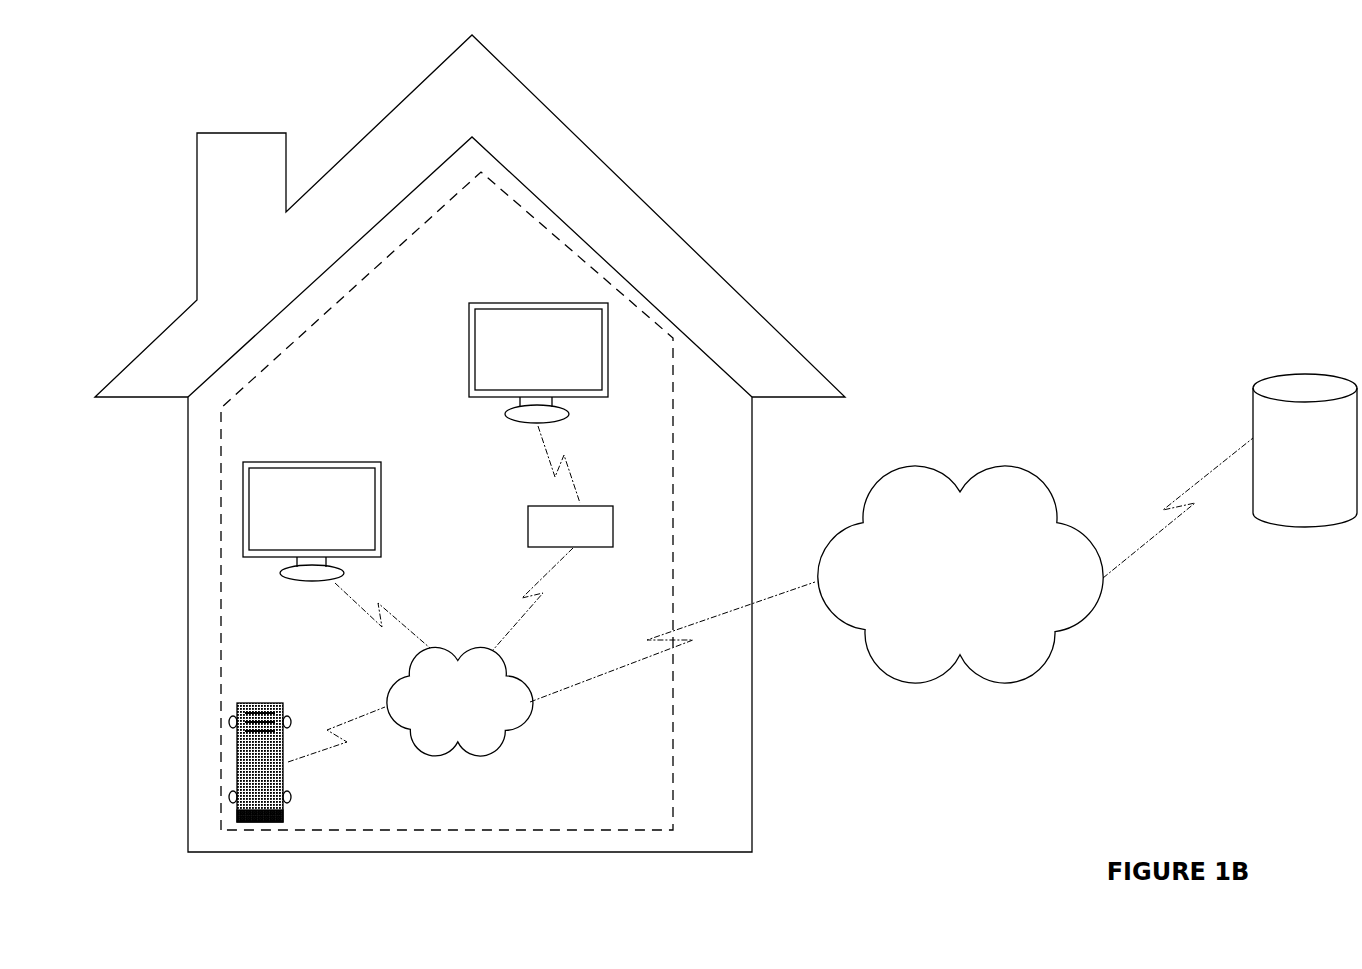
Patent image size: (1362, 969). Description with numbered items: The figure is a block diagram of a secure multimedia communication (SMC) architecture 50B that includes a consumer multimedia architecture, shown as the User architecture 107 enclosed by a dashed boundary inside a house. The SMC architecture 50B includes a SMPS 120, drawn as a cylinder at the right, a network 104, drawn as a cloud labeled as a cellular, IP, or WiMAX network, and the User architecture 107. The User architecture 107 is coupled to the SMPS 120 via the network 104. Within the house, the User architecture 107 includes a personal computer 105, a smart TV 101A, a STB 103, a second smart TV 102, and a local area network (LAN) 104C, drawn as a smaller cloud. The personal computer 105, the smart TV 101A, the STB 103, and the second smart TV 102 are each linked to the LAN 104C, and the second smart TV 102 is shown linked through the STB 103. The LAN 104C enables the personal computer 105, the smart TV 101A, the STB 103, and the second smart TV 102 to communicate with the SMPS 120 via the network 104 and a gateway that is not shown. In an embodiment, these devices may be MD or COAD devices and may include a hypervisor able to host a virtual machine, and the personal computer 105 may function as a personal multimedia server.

The secure multimedia communication (SMC) architecture 50B is at (1165, 812).
The smart TV 101A is at (325, 461).
The second smart TV 102 is at (495, 300).
The STB 103 is at (526, 510).
The network 104 is at (1006, 460).
The local area network (LAN) 104C is at (478, 752).
The personal computer 105 is at (298, 805).
The User architecture 107 is at (667, 522).
The SMPS 120 is at (1290, 372).